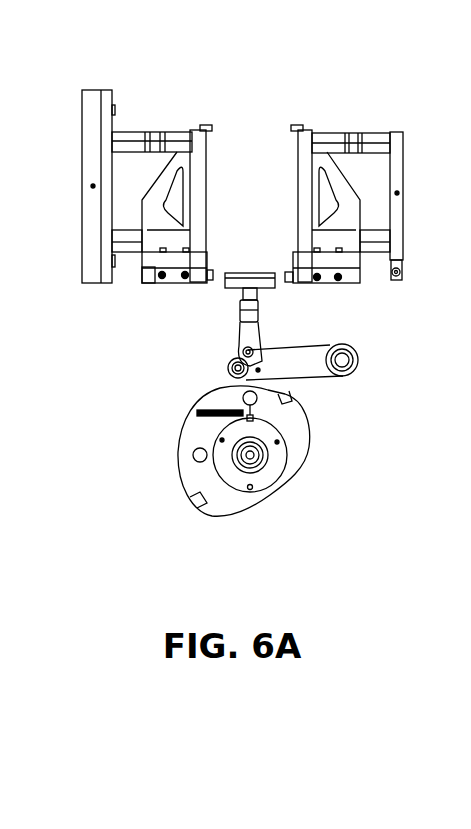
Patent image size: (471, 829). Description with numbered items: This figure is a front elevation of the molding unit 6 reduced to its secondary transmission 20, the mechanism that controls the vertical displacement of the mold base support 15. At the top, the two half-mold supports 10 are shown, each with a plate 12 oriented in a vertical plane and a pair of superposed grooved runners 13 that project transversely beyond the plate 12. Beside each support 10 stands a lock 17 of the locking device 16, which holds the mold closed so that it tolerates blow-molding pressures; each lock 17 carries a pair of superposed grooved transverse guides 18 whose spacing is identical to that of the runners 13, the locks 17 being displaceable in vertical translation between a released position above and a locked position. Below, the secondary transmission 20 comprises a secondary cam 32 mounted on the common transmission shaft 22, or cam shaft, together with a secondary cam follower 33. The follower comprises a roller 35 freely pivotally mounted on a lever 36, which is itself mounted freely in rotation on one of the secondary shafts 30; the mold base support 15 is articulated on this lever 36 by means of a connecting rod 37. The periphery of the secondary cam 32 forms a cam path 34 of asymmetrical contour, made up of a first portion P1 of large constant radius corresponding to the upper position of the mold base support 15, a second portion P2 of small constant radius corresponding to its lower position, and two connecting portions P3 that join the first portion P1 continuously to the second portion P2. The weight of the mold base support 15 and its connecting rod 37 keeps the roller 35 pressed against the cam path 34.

The molding unit 6 is at (255, 82).
The support 10 is at (164, 296).
The plate 12 is at (197, 178).
The grooved runners 13 is at (173, 140).
The mold base support 15 is at (238, 273).
The locking device 16 is at (416, 124).
The lock 17 is at (90, 168).
The grooved transverse guides 18 is at (119, 137).
The secondary transmission 20 is at (168, 375).
The transmission shaft 22 is at (257, 460).
The secondary shaft 30 is at (360, 355).
The secondary cam 32 is at (170, 475).
The secondary cam follower 33 is at (190, 496).
The cam path 34 is at (222, 355).
The roller 35 is at (222, 386).
The lever 36 is at (305, 363).
The connecting rod 37 is at (252, 339).
The first portion P1 is at (168, 442).
The second portion P2 is at (290, 505).
The connecting portions P3 is at (322, 449).